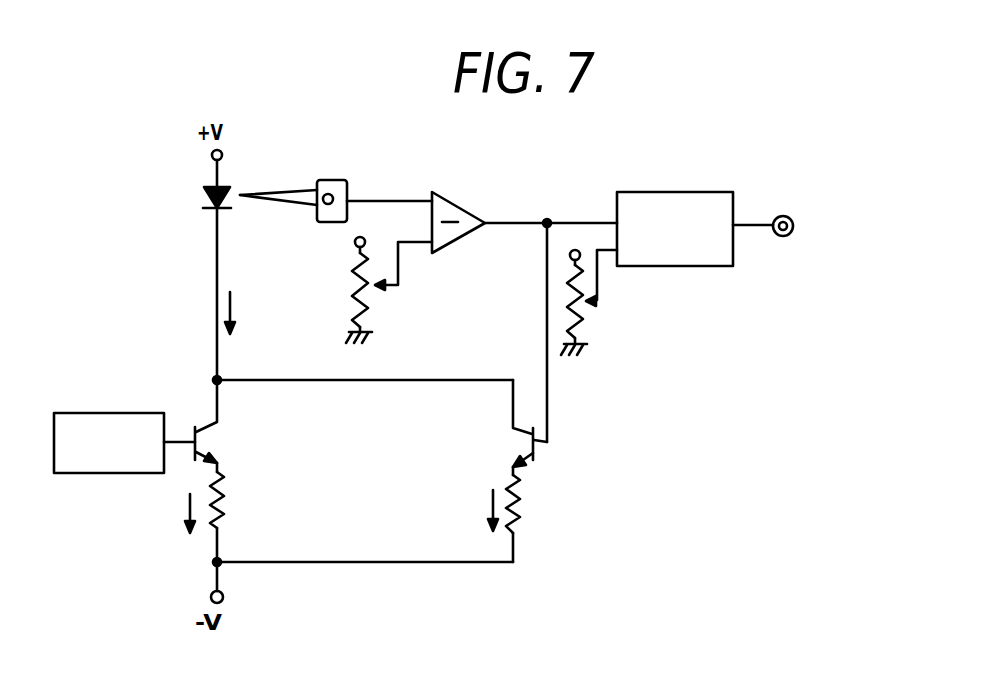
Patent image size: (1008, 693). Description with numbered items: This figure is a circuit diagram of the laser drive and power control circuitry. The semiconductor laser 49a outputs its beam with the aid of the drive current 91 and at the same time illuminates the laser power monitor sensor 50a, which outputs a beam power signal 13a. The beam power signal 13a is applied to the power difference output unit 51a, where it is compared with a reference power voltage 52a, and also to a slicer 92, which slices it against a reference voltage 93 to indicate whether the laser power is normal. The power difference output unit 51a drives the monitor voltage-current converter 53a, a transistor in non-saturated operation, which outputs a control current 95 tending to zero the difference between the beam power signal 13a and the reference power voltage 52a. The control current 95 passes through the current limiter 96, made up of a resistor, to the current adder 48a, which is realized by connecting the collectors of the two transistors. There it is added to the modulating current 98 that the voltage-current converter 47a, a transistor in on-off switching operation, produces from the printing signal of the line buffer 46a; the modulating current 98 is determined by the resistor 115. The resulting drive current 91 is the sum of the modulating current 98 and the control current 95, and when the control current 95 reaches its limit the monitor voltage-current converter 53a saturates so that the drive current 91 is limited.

The beam power signal 13a is at (386, 201).
The line buffer 46a is at (73, 473).
The voltage-current converter 47a is at (203, 424).
The current adder 48a is at (215, 376).
The semiconductor laser 49a is at (205, 197).
The laser power monitor sensor 50a is at (326, 180).
The power difference output unit 51a is at (455, 200).
The reference power voltage 52a is at (378, 296).
The monitor voltage-current converter 53a is at (545, 452).
The drive current 91 is at (257, 320).
The slicer 92 is at (712, 192).
The reference voltage 93 is at (590, 306).
The control current 95 is at (452, 478).
The current limiter 96 is at (550, 530).
The modulating current 98 is at (152, 528).
The resistor 115 is at (258, 498).